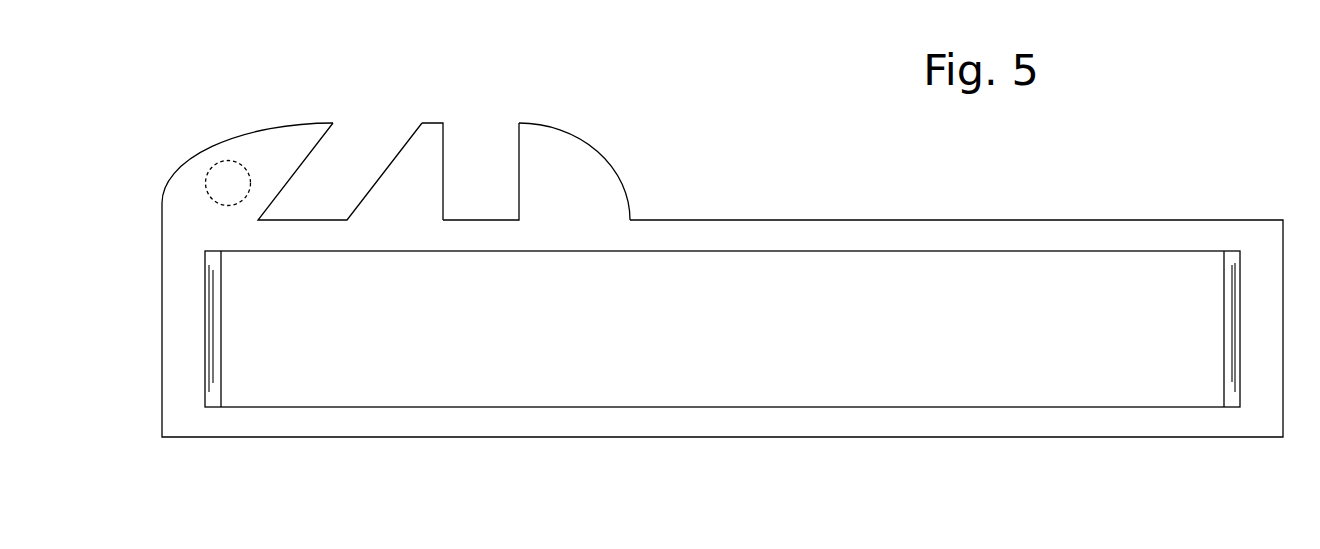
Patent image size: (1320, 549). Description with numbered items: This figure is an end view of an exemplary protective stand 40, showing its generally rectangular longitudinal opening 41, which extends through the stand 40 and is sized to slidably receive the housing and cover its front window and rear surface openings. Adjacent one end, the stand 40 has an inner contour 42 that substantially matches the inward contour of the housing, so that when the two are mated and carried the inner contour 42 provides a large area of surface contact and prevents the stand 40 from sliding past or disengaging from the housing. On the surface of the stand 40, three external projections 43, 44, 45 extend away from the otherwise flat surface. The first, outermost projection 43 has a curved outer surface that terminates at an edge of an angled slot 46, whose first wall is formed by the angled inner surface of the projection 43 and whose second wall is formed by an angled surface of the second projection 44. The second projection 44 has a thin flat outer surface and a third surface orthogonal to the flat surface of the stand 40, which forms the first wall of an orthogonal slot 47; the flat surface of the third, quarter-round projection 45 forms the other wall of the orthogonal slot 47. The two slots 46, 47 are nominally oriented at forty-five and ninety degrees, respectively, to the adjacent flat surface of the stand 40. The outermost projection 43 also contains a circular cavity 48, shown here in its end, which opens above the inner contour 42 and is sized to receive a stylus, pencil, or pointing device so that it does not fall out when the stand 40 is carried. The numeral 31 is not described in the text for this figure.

The housing 31 is at (1120, 438).
The protective stand 40 is at (152, 109).
The longitudinal opening 41 is at (808, 385).
The inner contour 42 is at (222, 322).
The first outermost projection 43 is at (227, 137).
The second projection 44 is at (435, 122).
The third quarter-round projection 45 is at (617, 170).
The angled slot 46 is at (376, 111).
The orthogonal slot 47 is at (503, 104).
The circular cavity 48 is at (207, 177).